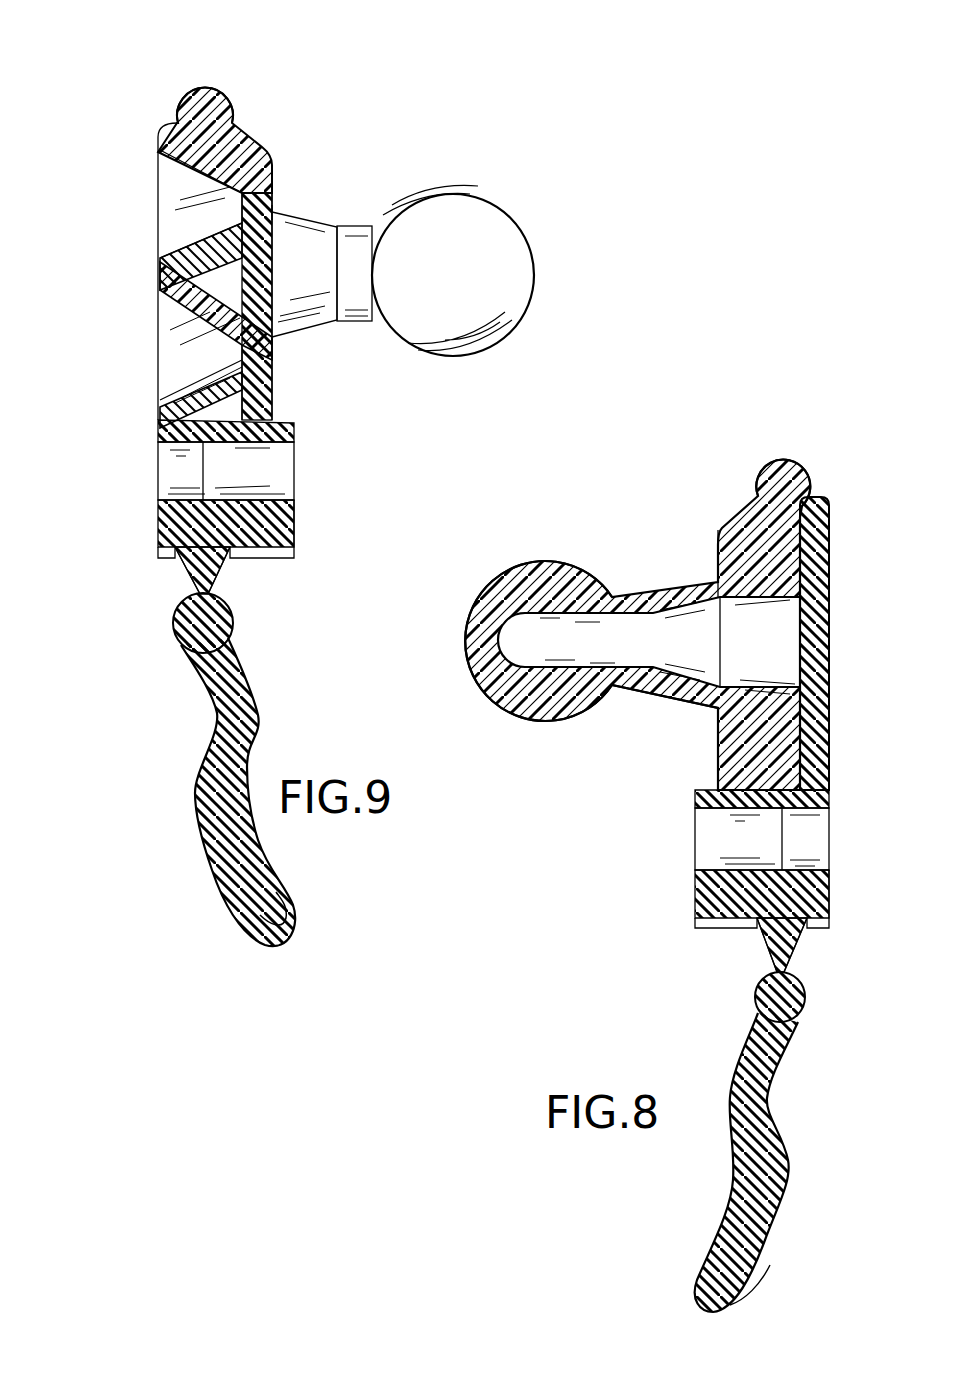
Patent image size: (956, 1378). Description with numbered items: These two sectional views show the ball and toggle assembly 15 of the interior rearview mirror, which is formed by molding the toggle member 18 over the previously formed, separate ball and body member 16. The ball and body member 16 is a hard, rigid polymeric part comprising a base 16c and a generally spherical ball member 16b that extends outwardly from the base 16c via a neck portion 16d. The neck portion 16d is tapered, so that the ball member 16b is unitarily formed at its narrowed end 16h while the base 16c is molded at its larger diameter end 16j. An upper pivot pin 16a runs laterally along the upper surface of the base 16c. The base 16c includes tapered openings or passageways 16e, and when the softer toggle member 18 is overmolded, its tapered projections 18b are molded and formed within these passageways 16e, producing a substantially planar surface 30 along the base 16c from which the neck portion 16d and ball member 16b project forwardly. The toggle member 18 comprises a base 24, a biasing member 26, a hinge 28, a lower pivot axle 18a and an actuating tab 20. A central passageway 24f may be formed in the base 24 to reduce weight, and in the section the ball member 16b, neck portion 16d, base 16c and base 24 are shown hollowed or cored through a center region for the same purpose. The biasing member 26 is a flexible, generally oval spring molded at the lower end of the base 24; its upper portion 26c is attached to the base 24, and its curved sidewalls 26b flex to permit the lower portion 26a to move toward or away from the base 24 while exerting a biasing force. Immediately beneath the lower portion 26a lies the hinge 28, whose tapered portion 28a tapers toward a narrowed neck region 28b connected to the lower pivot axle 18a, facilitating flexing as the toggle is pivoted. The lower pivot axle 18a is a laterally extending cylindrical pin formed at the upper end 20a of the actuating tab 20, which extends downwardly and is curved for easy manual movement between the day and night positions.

In FIG. 9, the ball and toggle assembly 15 is at (352, 32).
In FIG. 8, the ball and toggle assembly 15 is at (687, 434).
In FIG. 9, the ball and body member 16 is at (262, 135).
In FIG. 8, the ball and body member 16 is at (637, 591).
In FIG. 9, the upper pivot pin 16a is at (205, 90).
In FIG. 8, the upper pivot pin 16a is at (770, 465).
In FIG. 9, the ball member 16b is at (457, 215).
In FIG. 8, the ball member 16b is at (537, 715).
In FIG. 9, the base 16c is at (297, 222).
In FIG. 8, the base 16c is at (723, 750).
In FIG. 9, the neck portion 16d is at (345, 223).
In FIG. 8, the neck portion 16d is at (661, 590).
In FIG. 9, the tapered openings or passageways 16e is at (178, 158).
In FIG. 9, the narrowed end 16h is at (370, 288).
In FIG. 9, the larger diameter end 16j is at (274, 212).
In FIG. 9, the toggle member 18 is at (305, 555).
In FIG. 8, the toggle member 18 is at (833, 510).
In FIG. 9, the lower pivot axle 18a is at (207, 632).
In FIG. 8, the lower pivot axle 18a is at (786, 1003).
In FIG. 9, the tapered projections 18b is at (240, 207).
In FIG. 9, the actuating tab 20 is at (265, 870).
In FIG. 8, the actuating tab 20 is at (748, 1155).
In FIG. 9, the upper end of actuating tab 20a is at (235, 690).
In FIG. 8, the upper end of actuating tab 20a is at (790, 1045).
In FIG. 9, the base of toggle member 24 is at (200, 300).
In FIG. 8, the base of toggle member 24 is at (822, 765).
In FIG. 8, the central passageway 24f is at (830, 685).
In FIG. 9, the biasing member 26 is at (296, 500).
In FIG. 8, the biasing member 26 is at (710, 848).
In FIG. 9, the lower portion of biasing member 26a is at (291, 538).
In FIG. 8, the lower portion of biasing member 26a is at (697, 930).
In FIG. 9, the curved sidewalls 26b is at (296, 486).
In FIG. 8, the curved sidewalls 26b is at (695, 873).
In FIG. 9, the upper portion of biasing member 26c is at (278, 462).
In FIG. 8, the upper portion of biasing member 26c is at (695, 807).
In FIG. 9, the hinge 28 is at (180, 578).
In FIG. 8, the hinge 28 is at (773, 940).
In FIG. 9, the tapered portion 28a is at (218, 578).
In FIG. 8, the tapered portion 28a is at (788, 963).
In FIG. 9, the neck region 28b is at (178, 610).
In FIG. 8, the neck region 28b is at (770, 973).
In FIG. 9, the planar surface 30 is at (268, 378).
In FIG. 8, the planar surface 30 is at (718, 718).